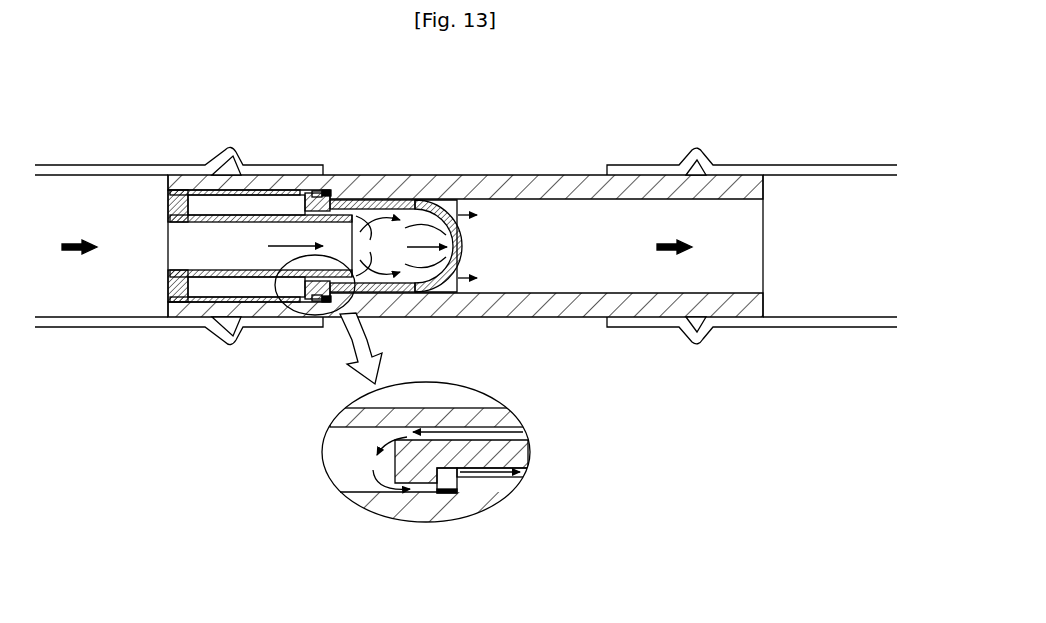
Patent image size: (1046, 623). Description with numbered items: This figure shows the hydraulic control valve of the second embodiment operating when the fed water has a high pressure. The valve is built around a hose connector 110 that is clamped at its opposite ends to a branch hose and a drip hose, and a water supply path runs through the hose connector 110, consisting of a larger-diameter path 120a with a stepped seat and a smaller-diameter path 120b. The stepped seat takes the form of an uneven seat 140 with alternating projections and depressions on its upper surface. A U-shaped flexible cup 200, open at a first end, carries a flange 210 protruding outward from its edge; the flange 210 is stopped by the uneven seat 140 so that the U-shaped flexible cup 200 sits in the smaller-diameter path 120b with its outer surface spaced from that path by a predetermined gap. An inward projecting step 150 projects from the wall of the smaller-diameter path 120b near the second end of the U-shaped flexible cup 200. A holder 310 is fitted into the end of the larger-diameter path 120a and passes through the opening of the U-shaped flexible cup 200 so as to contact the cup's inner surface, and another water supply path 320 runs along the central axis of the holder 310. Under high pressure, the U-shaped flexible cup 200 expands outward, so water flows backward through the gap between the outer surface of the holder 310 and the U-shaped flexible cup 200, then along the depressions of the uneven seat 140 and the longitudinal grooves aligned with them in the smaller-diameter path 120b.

The hose connector 110 is at (650, 303).
The larger-diameter path 120a is at (246, 207).
The smaller-diameter path 120b is at (666, 232).
The uneven seat 140 is at (462, 496).
The inward projecting step 150 is at (458, 180).
The U-shaped flexible cup 200 is at (380, 198).
The flange 210 is at (418, 470).
The holder 310 is at (176, 290).
The water supply path 320 is at (244, 256).